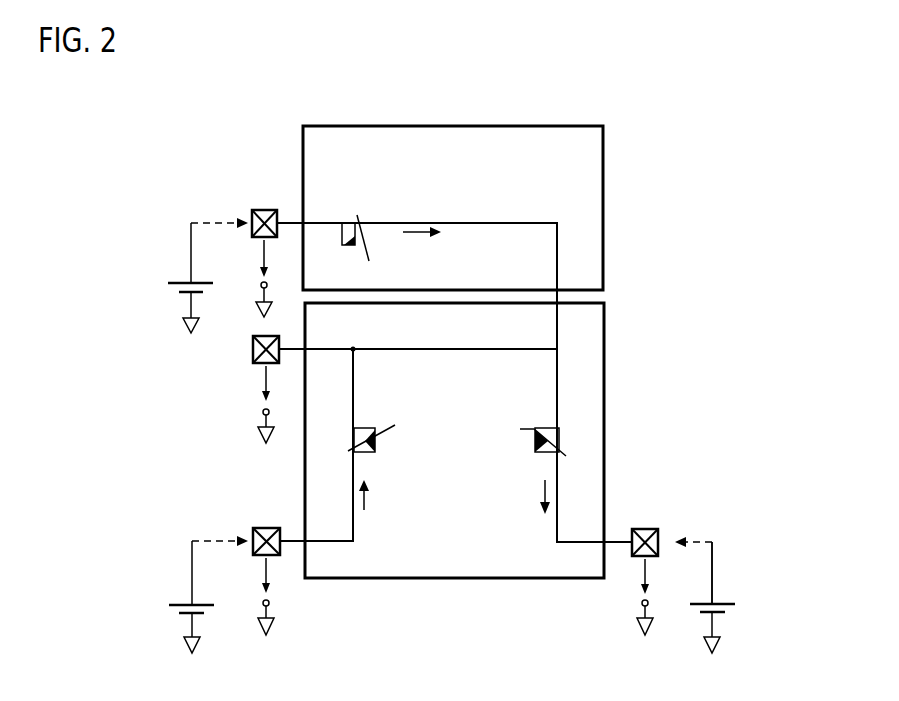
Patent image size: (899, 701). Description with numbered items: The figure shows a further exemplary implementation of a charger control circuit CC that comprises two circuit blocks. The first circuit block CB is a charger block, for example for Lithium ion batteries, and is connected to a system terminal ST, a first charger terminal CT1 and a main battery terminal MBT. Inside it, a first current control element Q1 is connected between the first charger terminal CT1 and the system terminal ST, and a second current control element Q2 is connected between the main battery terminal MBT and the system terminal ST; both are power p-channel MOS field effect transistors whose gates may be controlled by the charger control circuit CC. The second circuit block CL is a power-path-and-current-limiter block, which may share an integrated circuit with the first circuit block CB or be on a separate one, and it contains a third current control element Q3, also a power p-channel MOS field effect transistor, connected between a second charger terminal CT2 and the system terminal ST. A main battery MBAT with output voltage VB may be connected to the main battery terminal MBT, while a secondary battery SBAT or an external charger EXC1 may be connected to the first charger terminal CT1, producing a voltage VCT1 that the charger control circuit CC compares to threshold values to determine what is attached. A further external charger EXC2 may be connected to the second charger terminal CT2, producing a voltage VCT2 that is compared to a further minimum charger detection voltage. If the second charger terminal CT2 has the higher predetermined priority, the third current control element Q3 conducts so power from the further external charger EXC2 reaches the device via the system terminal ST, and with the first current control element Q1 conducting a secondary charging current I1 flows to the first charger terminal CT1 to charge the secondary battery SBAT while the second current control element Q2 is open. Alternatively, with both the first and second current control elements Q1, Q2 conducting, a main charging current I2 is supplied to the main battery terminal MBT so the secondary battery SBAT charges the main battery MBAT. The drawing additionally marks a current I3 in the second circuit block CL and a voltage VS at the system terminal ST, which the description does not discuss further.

The charger control circuit CC is at (668, 156).
The second circuit block CL is at (453, 208).
The first circuit block CB is at (454, 440).
The second charger terminal CT2 is at (260, 202).
The system terminal ST is at (246, 351).
The main battery terminal MBT is at (257, 523).
The first charger terminal CT1 is at (652, 523).
The third current control element Q3 is at (362, 220).
The second current control element Q2 is at (374, 422).
The first current control element Q1 is at (538, 424).
The third current I3 is at (422, 245).
The main charging current I2 is at (376, 500).
The secondary charging current I1 is at (534, 497).
The voltage applied at the second charger terminal VCT2 is at (234, 278).
The supply voltage VS is at (247, 404).
The output voltage of the main battery VB is at (248, 596).
The voltage applied at the first charger terminal VCT1 is at (608, 597).
The further external charger EXC2 is at (173, 275).
The main battery MBAT is at (184, 594).
The secondary battery SBAT is at (733, 595).
The external charger EXC1 is at (748, 576).